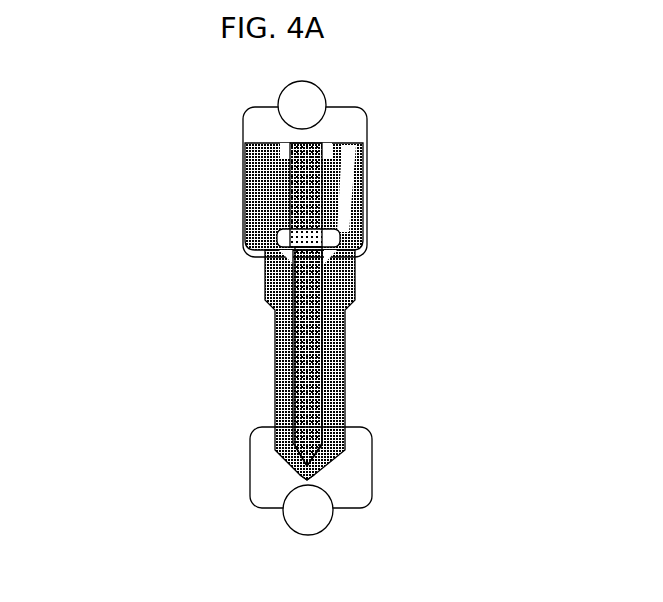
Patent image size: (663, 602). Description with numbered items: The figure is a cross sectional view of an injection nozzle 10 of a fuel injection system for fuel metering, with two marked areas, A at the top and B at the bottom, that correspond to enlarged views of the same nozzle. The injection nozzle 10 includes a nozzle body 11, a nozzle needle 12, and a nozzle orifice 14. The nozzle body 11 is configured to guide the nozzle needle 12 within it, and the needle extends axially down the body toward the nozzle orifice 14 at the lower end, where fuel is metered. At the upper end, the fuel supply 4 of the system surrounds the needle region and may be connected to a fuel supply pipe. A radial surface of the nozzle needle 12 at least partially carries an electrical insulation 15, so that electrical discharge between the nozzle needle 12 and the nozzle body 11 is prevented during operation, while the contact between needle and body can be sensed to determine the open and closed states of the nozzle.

The injection nozzle 10 is at (272, 320).
The fuel supply 4 is at (347, 202).
The nozzle body 11 is at (343, 282).
The nozzle needle 12 is at (305, 335).
The nozzle orifice 14 is at (293, 472).
The electrical insulation 15 is at (327, 187).